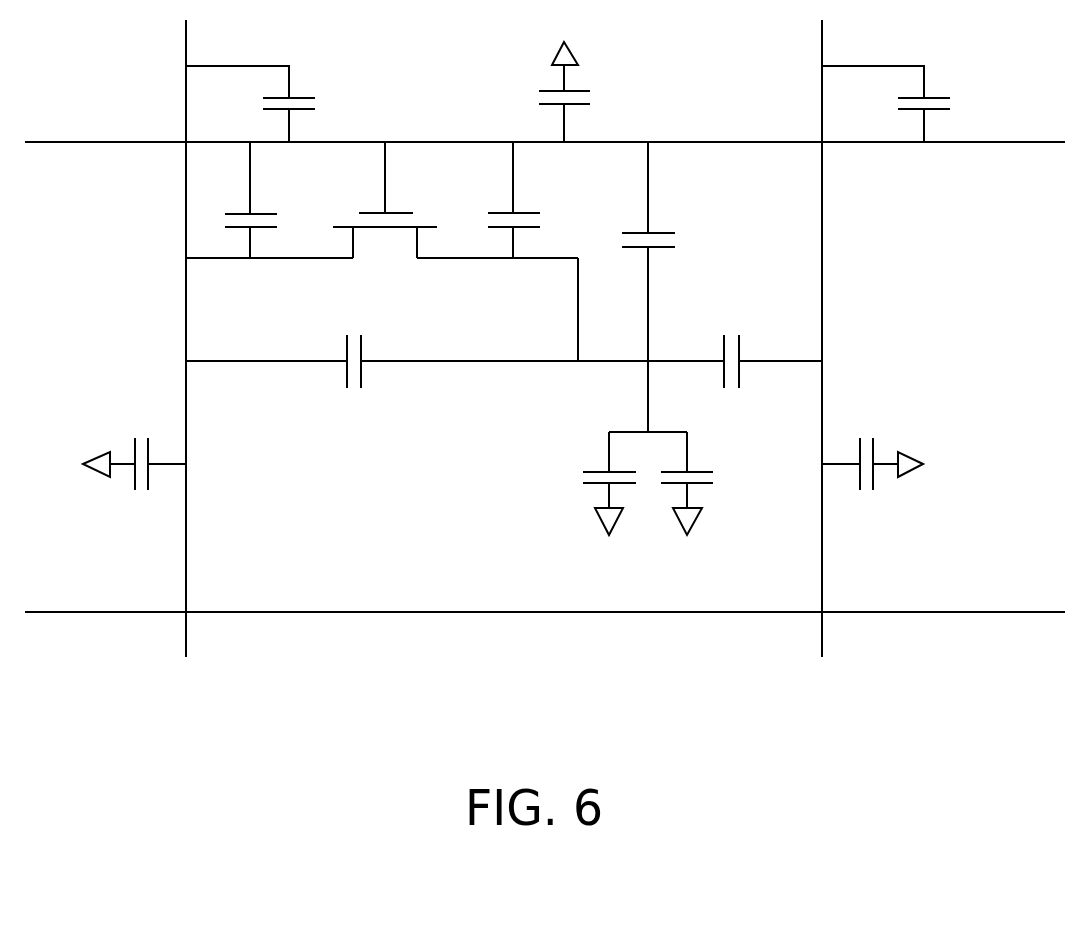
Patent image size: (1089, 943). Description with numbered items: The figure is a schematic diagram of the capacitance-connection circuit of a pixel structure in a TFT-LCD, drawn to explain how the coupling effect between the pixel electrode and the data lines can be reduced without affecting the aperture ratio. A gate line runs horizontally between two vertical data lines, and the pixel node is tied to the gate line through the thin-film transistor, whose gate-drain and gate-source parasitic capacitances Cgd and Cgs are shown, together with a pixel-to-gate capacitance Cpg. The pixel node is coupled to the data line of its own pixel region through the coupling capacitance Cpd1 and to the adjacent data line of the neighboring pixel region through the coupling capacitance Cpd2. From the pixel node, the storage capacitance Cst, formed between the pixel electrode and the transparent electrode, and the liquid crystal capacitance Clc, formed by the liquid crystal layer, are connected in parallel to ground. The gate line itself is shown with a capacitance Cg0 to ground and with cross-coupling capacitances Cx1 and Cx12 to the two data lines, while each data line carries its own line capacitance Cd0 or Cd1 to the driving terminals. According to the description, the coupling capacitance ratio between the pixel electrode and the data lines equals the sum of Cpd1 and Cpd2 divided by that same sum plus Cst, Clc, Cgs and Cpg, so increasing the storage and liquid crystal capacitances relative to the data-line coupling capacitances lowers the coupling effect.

The coupling capacitor between gate line and first data line Cx1 is at (279, 104).
The gate line capacitance to ground Cg0 is at (593, 92).
The coupling capacitor between gate line and second data line Cx12 is at (922, 104).
The gate-drain capacitance Cgd is at (275, 200).
The parasitic capacitance Cgs is at (490, 200).
The capacitance between pixel electrode and gate Cpg is at (676, 287).
The coupling capacitance Cpd2 is at (354, 342).
The coupling capacitance Cpd1 is at (731, 343).
The first data line capacitance Cd0 is at (134, 446).
The second data line capacitance Cd1 is at (872, 446).
The storage capacitance Cst is at (610, 483).
The capacitance of liquid crystal layer Clc is at (713, 483).